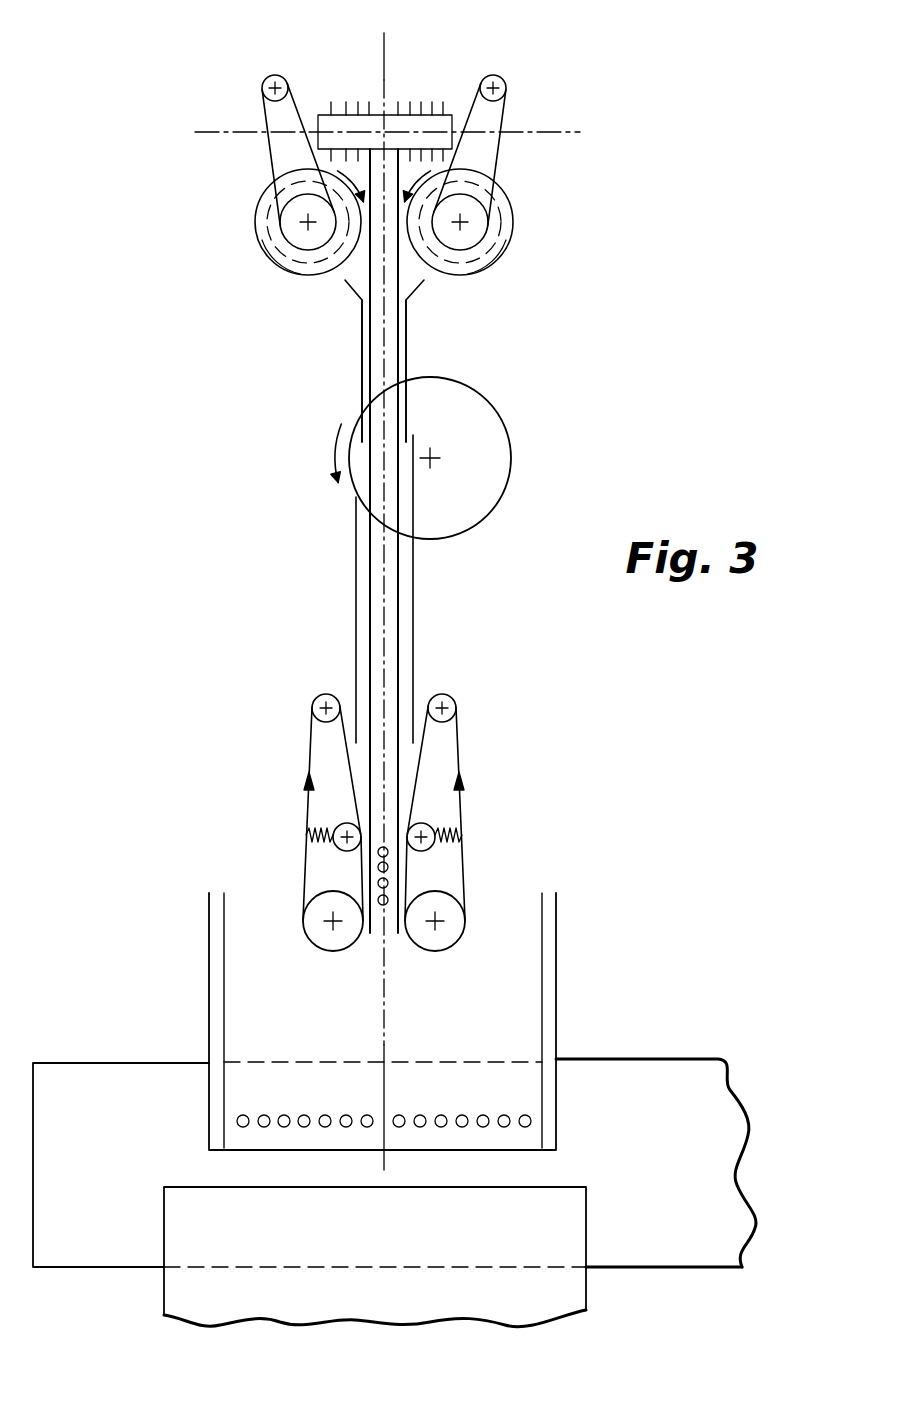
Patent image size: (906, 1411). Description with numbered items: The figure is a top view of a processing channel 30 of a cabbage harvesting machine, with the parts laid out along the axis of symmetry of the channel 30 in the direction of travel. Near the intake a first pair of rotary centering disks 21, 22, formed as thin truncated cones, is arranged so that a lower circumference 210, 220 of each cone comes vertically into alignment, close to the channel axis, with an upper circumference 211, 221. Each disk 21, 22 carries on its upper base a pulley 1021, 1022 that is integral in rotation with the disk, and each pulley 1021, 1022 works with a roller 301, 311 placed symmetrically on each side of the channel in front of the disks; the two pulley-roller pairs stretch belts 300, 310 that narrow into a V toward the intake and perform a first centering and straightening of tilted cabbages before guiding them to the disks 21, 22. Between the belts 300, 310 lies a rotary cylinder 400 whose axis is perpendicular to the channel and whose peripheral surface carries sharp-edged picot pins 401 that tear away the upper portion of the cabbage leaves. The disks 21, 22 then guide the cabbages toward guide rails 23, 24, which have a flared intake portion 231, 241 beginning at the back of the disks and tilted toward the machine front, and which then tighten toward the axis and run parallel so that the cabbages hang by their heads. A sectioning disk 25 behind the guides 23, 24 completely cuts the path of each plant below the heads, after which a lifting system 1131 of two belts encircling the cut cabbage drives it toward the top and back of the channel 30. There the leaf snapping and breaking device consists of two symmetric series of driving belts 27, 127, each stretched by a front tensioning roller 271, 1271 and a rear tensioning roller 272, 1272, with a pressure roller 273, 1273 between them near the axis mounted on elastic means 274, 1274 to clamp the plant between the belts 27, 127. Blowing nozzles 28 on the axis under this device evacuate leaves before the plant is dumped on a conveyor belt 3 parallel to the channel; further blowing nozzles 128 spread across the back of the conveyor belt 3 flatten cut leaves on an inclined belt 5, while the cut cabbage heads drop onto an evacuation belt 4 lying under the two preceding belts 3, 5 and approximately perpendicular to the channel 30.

The processing channel 30 is at (389, 62).
The rotary cylinder 400 is at (330, 120).
The picot pins 401 is at (418, 110).
The belt 300 is at (263, 118).
The roller 301 is at (277, 74).
The belt 310 is at (508, 118).
The roller 311 is at (497, 75).
The centering disk 22 is at (260, 240).
The lower circumference 220 is at (275, 220).
The upper circumference 221 is at (275, 264).
The pulley 1022 is at (300, 240).
The centering disk 21 is at (508, 236).
The lower circumference 210 is at (495, 222).
The upper circumference 211 is at (497, 252).
The pulley 1021 is at (468, 240).
The flared portion 241 is at (355, 296).
The guide rail 24 is at (361, 378).
The flared portion 231 is at (413, 294).
The guide rail 23 is at (408, 353).
The lifting system 1131 is at (415, 598).
The sectioning disk 25 is at (498, 411).
The tensioning roller 271 is at (313, 704).
The driving belt 27 is at (308, 769).
The elastic means 274 is at (318, 830).
The pressure roller 273 is at (343, 850).
The tensioning roller 272 is at (322, 943).
The tensioning roller 1271 is at (455, 704).
The driving belt 127 is at (459, 769).
The elastic means 1274 is at (448, 830).
The pressure roller 1273 is at (422, 850).
The tensioning roller 1272 is at (443, 943).
The blowing nozzles 28 is at (381, 906).
The conveyor belt 3 is at (313, 1097).
The blowing nozzles 128 is at (265, 1114).
The evacuation belt 4 is at (108, 1155).
The inclined belt 5 is at (352, 1309).